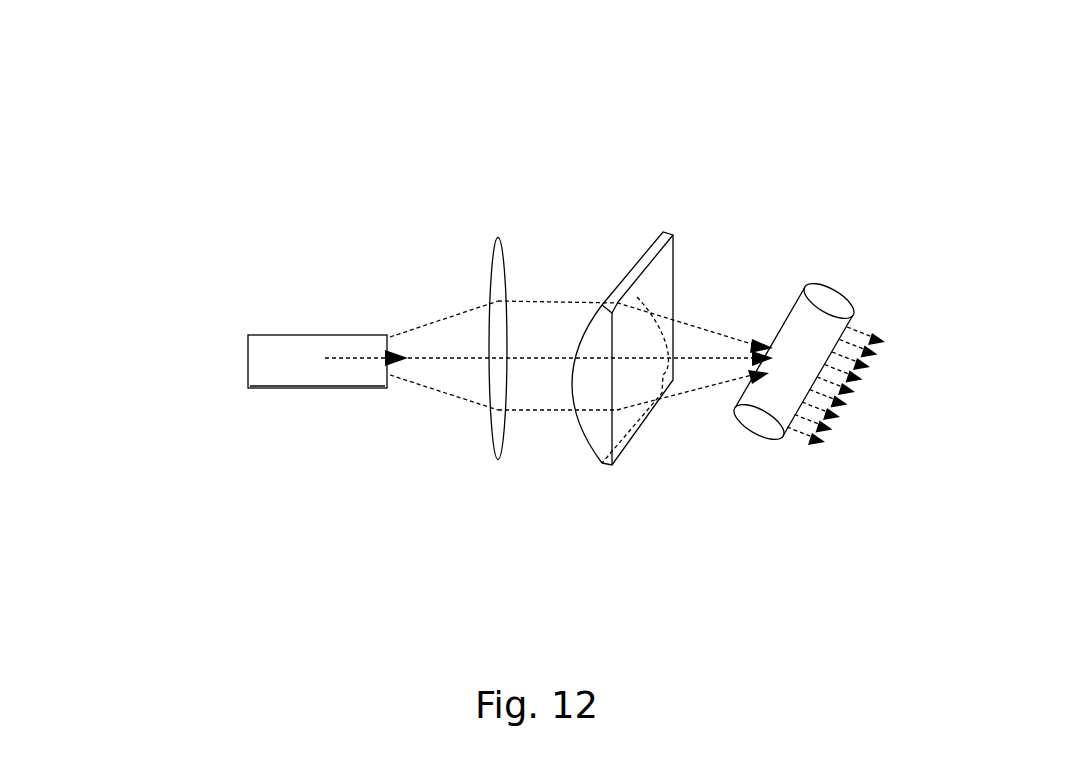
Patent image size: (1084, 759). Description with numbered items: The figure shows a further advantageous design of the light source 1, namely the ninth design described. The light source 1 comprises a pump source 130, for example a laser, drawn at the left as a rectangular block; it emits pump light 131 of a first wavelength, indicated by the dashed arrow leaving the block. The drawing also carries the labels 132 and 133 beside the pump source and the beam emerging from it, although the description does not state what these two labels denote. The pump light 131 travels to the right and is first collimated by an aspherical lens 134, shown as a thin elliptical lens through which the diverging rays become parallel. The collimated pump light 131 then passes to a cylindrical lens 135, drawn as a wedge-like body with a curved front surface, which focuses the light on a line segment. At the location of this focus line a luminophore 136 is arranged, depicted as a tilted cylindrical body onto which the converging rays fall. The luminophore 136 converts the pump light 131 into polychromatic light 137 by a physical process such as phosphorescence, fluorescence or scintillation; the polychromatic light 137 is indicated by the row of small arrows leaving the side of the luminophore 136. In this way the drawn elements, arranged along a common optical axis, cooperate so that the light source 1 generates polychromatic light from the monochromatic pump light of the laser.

The light source 1 is at (217, 480).
The pump source 130 is at (248, 377).
The pump light 131 is at (348, 358).
The light source housing 132 is at (328, 400).
The diverging light beam 133 is at (418, 326).
The aspherical lens 134 is at (503, 447).
The cylindrical lens 135 is at (661, 232).
The luminophore 136 is at (808, 288).
The polychromatic light 137 is at (870, 334).